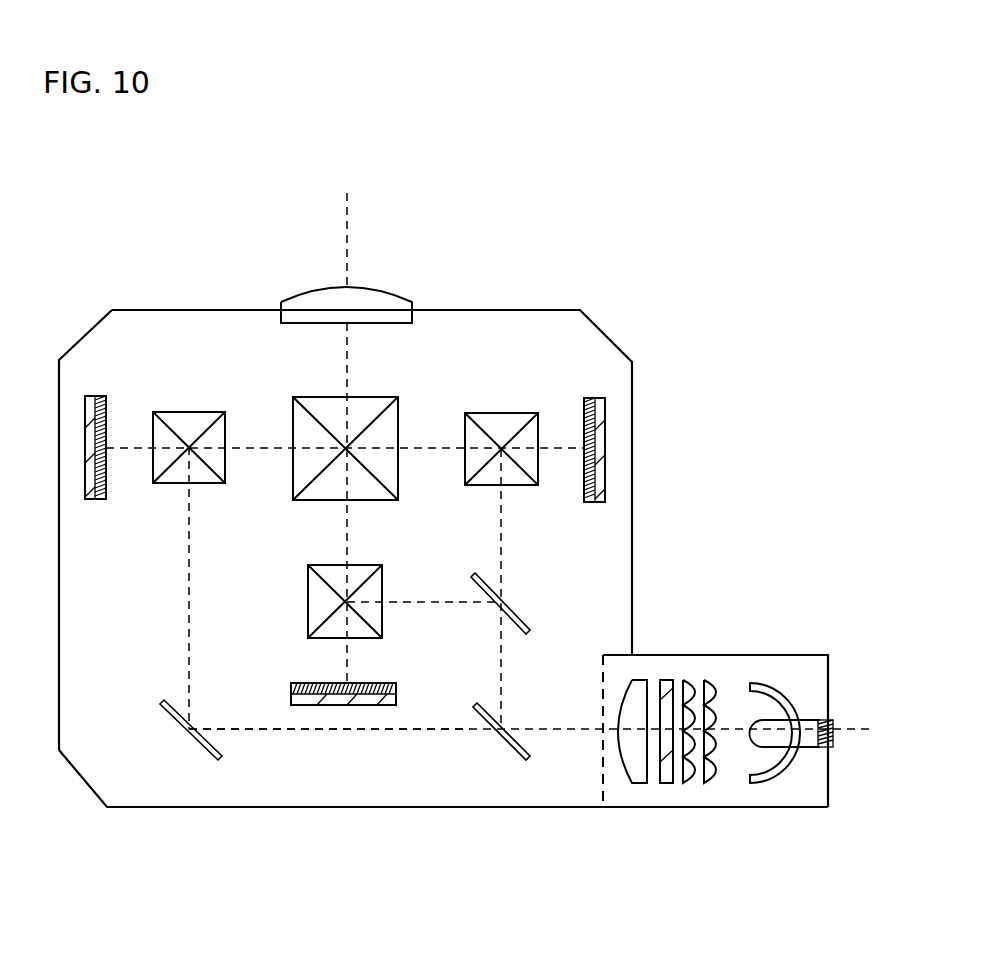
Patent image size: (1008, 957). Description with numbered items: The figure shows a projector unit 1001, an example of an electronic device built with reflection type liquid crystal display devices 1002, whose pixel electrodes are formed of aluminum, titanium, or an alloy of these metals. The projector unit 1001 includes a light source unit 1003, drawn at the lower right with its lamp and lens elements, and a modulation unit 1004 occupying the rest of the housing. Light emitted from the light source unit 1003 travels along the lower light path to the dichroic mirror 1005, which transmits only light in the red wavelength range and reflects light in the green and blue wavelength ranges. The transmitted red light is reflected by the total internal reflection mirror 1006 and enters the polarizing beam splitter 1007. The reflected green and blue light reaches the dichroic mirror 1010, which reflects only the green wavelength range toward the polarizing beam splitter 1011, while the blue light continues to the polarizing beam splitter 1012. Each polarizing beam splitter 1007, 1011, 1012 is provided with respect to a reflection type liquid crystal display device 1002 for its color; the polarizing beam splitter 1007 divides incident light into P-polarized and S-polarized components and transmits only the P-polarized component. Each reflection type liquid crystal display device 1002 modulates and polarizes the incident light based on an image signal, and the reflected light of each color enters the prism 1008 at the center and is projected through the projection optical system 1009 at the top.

The projector unit 1001 is at (643, 441).
The reflection type liquid crystal display device 1002 is at (93, 396).
The light source unit 1003 is at (722, 793).
The modulation unit 1004 is at (188, 783).
The dichroic mirror 1005 is at (530, 758).
The total internal reflection mirror 1006 is at (221, 759).
The polarizing beam splitter 1007 is at (198, 412).
The prism 1008 is at (299, 397).
The projection optical system 1009 is at (363, 287).
The dichroic mirror 1010 is at (510, 607).
The polarizing beam splitter 1011 is at (307, 612).
The polarizing beam splitter 1012 is at (503, 413).